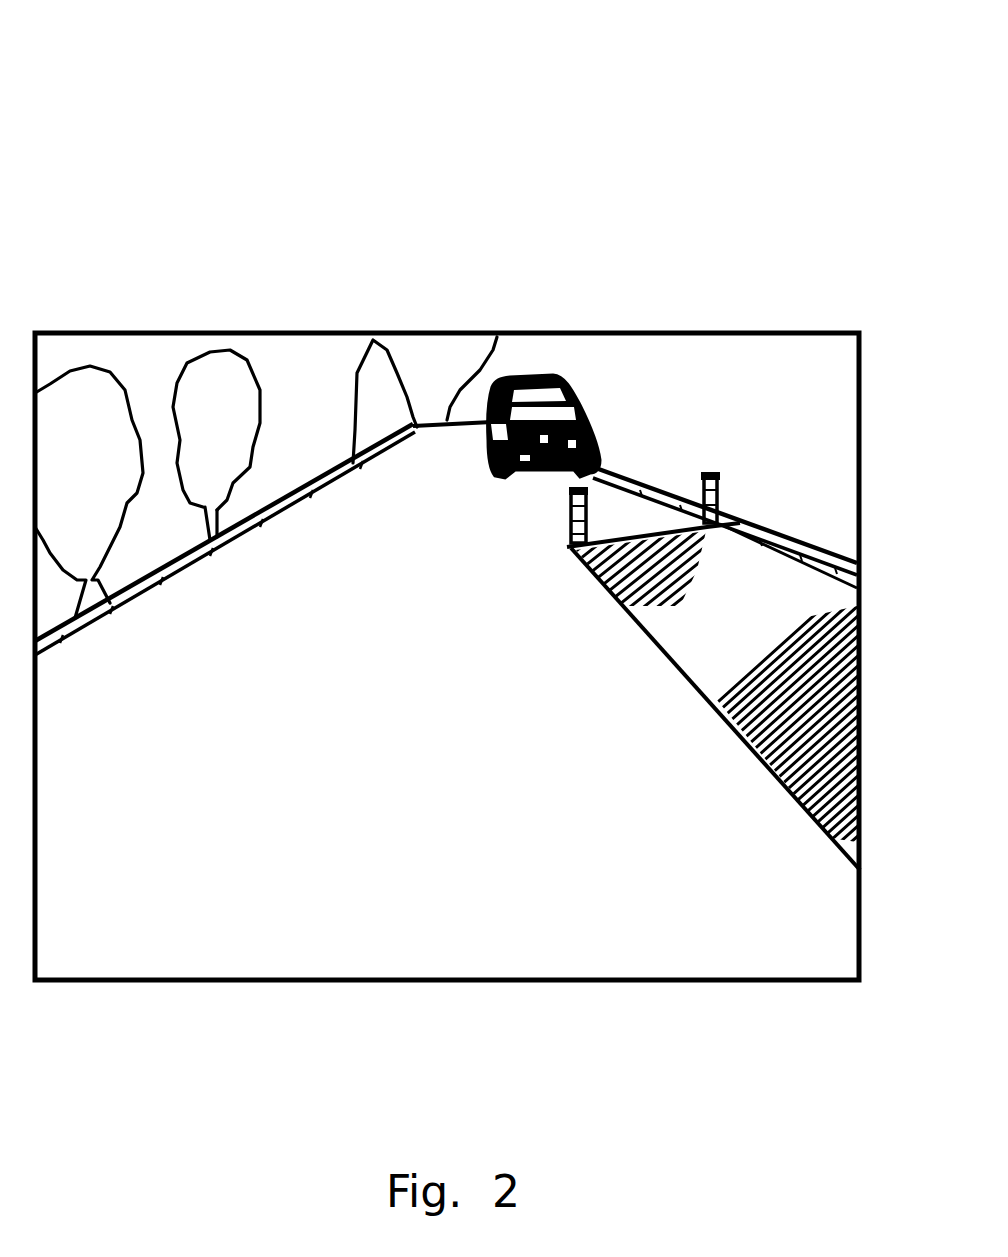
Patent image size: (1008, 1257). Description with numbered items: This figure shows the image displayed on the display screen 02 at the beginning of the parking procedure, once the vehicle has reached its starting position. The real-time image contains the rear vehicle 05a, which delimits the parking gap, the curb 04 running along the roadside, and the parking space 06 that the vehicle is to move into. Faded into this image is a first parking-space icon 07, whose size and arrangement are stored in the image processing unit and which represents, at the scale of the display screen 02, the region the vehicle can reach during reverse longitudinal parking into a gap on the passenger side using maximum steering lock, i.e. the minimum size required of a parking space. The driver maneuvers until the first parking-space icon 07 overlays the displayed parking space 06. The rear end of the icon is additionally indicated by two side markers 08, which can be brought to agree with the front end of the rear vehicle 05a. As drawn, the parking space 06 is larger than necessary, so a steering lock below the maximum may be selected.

The display screen 02 is at (758, 145).
The curb 04 is at (142, 600).
The rear vehicle 05a is at (487, 437).
The parking space 06 is at (756, 635).
The first parking-space icon 07 is at (688, 650).
The side markers 08 is at (570, 530).